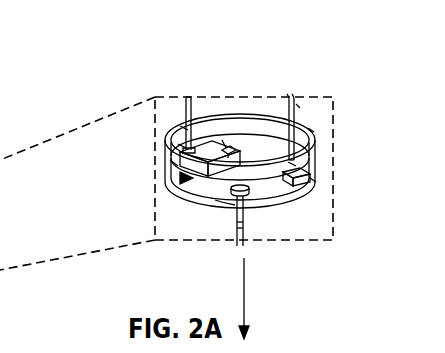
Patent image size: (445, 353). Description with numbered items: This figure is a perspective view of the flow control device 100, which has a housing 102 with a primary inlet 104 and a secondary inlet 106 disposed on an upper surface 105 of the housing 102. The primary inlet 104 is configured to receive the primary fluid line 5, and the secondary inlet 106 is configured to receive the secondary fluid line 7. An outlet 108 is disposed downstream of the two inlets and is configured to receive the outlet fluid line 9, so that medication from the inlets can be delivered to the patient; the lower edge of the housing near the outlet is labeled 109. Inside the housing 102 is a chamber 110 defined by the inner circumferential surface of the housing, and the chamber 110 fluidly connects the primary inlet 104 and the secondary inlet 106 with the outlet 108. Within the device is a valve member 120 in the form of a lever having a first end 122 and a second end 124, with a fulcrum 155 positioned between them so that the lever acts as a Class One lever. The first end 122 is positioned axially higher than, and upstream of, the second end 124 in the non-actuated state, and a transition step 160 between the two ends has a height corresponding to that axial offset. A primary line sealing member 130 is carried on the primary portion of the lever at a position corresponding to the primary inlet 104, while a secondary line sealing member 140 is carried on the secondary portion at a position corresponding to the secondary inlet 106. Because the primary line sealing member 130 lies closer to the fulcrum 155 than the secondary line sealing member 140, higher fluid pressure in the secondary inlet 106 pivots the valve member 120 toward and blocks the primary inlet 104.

The flow control device 100 is at (166, 66).
The housing 102 is at (316, 140).
The primary inlet 104 is at (183, 145).
The upper surface 105 is at (226, 146).
The secondary inlet 106 is at (312, 130).
The outlet 108 is at (256, 208).
The bottom edge 109 is at (222, 203).
The chamber 110 is at (181, 178).
The valve member 120 is at (293, 186).
The first end 122 is at (175, 162).
The second end 124 is at (292, 164).
The primary line sealing member 130 is at (178, 149).
The secondary line sealing member 140 is at (314, 180).
The fulcrum 155 is at (200, 140).
The transition step 160 is at (234, 150).
The primary fluid line 5 is at (185, 127).
The secondary fluid line 7 is at (300, 107).
The outlet fluid line 9 is at (245, 228).